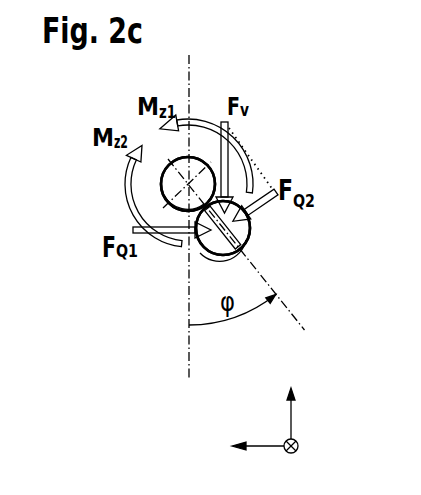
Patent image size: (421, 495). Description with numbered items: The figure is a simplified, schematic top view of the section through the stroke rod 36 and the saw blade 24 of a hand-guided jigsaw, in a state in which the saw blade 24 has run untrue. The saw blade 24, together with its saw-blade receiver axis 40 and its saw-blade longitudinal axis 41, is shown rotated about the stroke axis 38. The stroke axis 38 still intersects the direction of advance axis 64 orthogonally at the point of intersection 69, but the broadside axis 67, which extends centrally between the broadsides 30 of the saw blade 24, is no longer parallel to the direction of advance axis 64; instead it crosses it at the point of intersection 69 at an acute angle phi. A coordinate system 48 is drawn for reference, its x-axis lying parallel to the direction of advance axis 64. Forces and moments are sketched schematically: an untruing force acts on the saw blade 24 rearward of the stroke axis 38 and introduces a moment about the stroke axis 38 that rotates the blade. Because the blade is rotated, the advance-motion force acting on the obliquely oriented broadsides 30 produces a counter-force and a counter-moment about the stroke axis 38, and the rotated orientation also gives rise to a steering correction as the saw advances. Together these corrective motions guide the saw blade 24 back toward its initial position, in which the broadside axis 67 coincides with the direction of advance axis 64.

The saw blade 24 is at (200, 258).
The broadsides 30 is at (249, 238).
The stroke rod 36 is at (164, 195).
The stroke axis 38 is at (188, 184).
The saw-blade receiver axis 40 is at (223, 228).
The saw-blade longitudinal axis 41 is at (223, 228).
The coordinate system 48 is at (300, 446).
The direction of advance axis 64 is at (187, 349).
The broadside axis 67 is at (306, 330).
The point of intersection 69 is at (188, 184).